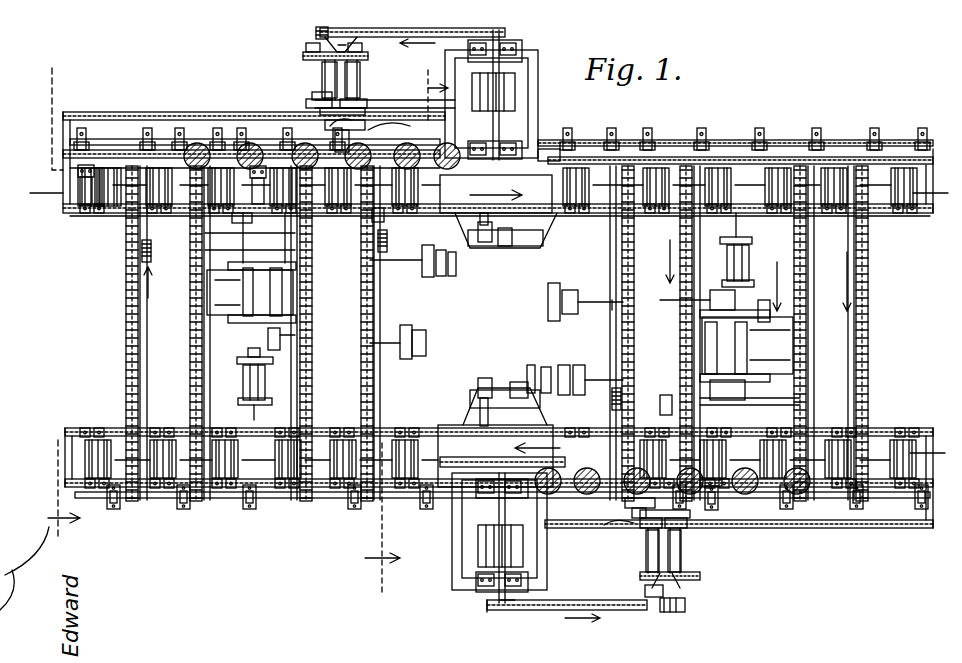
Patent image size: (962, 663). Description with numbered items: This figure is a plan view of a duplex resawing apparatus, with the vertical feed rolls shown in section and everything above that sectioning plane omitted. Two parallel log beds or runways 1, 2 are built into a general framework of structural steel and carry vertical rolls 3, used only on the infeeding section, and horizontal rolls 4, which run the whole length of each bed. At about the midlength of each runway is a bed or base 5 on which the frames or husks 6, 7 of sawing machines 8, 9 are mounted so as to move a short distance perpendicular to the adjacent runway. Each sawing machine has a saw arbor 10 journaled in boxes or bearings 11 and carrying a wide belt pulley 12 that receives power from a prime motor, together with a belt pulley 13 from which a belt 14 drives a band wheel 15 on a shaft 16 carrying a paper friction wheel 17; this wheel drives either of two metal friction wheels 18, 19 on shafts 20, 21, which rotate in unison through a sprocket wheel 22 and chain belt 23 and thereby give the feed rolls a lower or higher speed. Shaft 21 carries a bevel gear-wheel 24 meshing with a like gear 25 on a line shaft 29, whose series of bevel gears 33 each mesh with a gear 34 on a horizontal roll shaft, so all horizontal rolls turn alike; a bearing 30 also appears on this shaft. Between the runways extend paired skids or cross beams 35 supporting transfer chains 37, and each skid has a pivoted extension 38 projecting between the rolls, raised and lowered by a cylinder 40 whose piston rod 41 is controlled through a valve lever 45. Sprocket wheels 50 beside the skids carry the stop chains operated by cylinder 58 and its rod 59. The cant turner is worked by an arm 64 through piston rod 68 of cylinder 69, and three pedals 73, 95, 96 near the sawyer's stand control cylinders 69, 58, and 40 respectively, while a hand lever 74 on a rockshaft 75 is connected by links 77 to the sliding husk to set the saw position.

The log bed or runway 1 is at (116, 112).
The log bed or runway 2 is at (85, 428).
The vertical rolls 3 is at (203, 146).
The horizontal rolls 4 is at (80, 190).
The bed or base 5 is at (52, 72).
The frame or husk 6 is at (448, 80).
The frame or husk 7 is at (457, 546).
The sawing machine 8 is at (548, 149).
The sawing machine 9 is at (478, 466).
The saw arbor 10 is at (494, 118).
The boxes or bearings 11 is at (515, 46).
The wide belt pulley 12 is at (510, 80).
The belt pulley 13 is at (476, 50).
The belt 14 is at (483, 329).
The band wheel 15 is at (316, 33).
The shaft 16 is at (306, 52).
The friction wheel 17 is at (354, 100).
The metal friction wheel 18 is at (314, 98).
The metal friction wheel 19 is at (366, 106).
The shaft 20 is at (312, 68).
The shaft 21 is at (350, 80).
The sprocket wheel 22 is at (302, 60).
The chain belt 23 is at (342, 50).
The bevel gear-wheel 24 is at (615, 532).
The bevel gear 25 is at (330, 118).
The line shaft 29 is at (123, 138).
The bearing 30 is at (179, 128).
The bevel gear 33 is at (223, 137).
The bevel gear 34 is at (91, 156).
The skids or cross beams 35 is at (142, 356).
The transfer chain 37 is at (374, 364).
The hinged or pivoted extension 38 is at (112, 207).
The cylinder 40 is at (243, 387).
The piston rod 41 is at (383, 216).
The lever 45 is at (251, 352).
The sprocket wheel 50 is at (151, 244).
The cylinder 58 is at (276, 350).
The piston rod or stem 59 is at (254, 318).
The arm 64 is at (244, 218).
The piston rod 68 is at (242, 238).
The cylinder 69 is at (242, 314).
The pedal or actuating lever 73 is at (457, 274).
The hand lever 74 is at (490, 240).
The rockshaft 75 is at (441, 274).
The link 77 is at (532, 232).
The pedal 95 is at (562, 365).
The pedal 96 is at (424, 276).